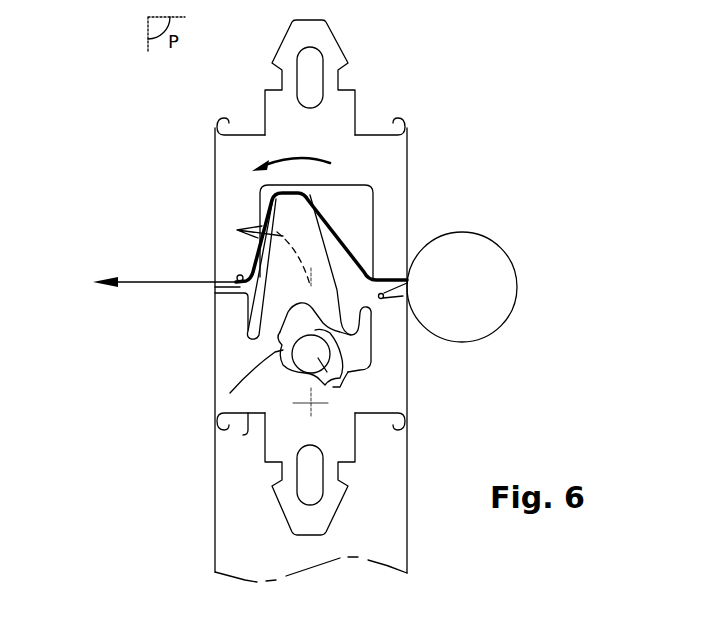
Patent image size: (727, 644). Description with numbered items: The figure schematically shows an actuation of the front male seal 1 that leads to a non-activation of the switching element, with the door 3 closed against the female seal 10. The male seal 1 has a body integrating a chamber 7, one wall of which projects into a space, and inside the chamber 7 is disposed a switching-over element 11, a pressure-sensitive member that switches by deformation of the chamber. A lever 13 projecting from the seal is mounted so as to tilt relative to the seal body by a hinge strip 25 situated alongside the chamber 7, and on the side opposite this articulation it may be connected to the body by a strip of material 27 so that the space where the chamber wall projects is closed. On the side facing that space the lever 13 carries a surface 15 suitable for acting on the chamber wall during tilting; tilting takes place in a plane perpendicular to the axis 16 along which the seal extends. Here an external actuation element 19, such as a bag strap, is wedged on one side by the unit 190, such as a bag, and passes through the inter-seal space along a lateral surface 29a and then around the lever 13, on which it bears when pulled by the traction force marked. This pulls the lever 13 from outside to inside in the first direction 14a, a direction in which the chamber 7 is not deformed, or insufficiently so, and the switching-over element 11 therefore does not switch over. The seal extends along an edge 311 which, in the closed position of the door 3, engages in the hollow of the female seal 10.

The front male seal 1 is at (184, 371).
The door 3 is at (377, 538).
The chamber 7 is at (270, 353).
The female seal 10 is at (182, 125).
The switching-over element 11 is at (327, 372).
The lever 13 is at (288, 207).
The first tilting direction 14a is at (293, 158).
The surface 15 is at (371, 367).
The axis 16 is at (311, 404).
The external actuation element 19 is at (158, 282).
The hinge strip 25 is at (273, 323).
The strip of material 27 is at (369, 311).
The lateral surface 29a is at (236, 278).
The bag strap unit 190 is at (468, 272).
The edge 311 is at (245, 437).